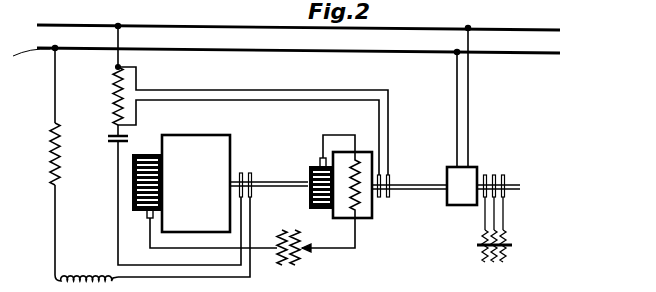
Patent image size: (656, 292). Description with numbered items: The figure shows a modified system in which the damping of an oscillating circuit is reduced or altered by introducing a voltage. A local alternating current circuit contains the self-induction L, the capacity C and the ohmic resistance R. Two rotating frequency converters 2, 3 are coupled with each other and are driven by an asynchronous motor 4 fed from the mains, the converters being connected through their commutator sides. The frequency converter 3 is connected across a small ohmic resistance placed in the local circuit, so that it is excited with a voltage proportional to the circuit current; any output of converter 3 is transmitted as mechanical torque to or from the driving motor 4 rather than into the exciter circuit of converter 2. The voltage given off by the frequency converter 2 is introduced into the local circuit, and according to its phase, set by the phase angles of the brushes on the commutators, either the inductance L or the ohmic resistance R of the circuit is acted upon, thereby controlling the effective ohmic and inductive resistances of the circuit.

The frequency converter 2 is at (222, 148).
The frequency converter 3 is at (370, 220).
The asynchronous motor 4 is at (473, 173).
The field resistance F is at (109, 96).
The capacity C is at (110, 139).
The ohmic resistance R is at (62, 154).
The self-induction L is at (86, 264).